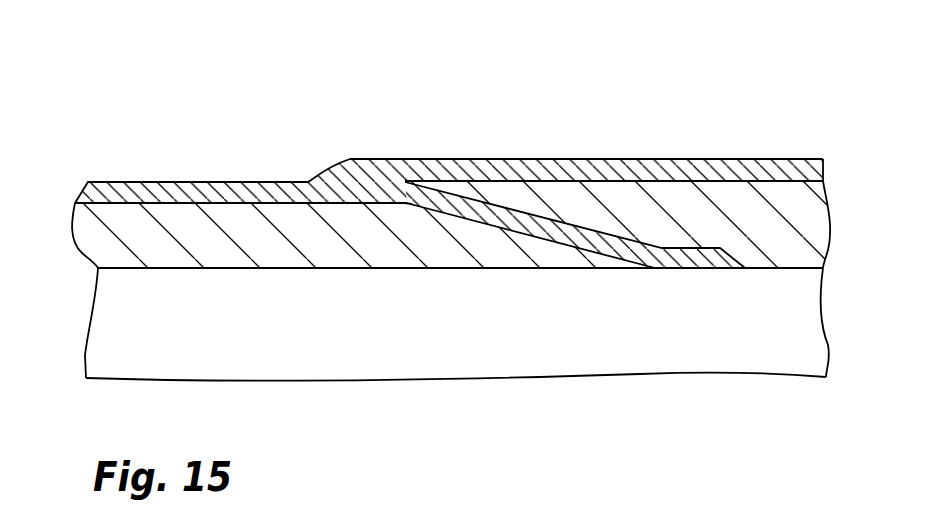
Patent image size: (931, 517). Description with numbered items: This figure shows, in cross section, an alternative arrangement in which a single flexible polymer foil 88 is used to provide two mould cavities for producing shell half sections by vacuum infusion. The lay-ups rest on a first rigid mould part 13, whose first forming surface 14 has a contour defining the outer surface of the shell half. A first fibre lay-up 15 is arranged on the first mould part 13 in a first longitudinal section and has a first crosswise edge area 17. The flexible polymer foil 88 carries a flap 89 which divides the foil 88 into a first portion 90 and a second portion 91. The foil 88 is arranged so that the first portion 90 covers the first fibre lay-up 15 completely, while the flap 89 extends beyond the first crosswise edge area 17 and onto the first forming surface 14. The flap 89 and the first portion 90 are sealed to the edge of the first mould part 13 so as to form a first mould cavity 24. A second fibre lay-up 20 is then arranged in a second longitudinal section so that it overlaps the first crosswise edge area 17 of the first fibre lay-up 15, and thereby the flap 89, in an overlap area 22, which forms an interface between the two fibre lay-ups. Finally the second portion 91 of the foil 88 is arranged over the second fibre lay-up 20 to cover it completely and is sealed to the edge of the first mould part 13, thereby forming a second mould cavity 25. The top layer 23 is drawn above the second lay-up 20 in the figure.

The first rigid mould part 13 is at (752, 354).
The first forming surface 14 is at (225, 268).
The first fibre lay-up 15 is at (121, 228).
The first crosswise edge area 17 is at (480, 238).
The second fibre lay-up 20 is at (745, 202).
The overlap area 22 is at (473, 195).
The top layer 23 is at (647, 159).
The first mould cavity 24 is at (232, 223).
The second mould cavity 25 is at (797, 197).
The flexible polymer foil 88 is at (267, 193).
The flap 89 is at (541, 228).
The first portion 90 is at (136, 192).
The second portion 91 is at (684, 170).